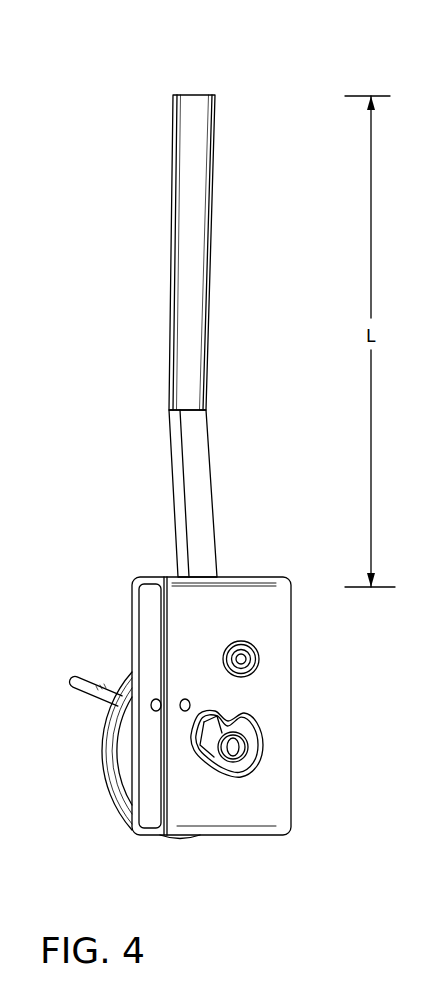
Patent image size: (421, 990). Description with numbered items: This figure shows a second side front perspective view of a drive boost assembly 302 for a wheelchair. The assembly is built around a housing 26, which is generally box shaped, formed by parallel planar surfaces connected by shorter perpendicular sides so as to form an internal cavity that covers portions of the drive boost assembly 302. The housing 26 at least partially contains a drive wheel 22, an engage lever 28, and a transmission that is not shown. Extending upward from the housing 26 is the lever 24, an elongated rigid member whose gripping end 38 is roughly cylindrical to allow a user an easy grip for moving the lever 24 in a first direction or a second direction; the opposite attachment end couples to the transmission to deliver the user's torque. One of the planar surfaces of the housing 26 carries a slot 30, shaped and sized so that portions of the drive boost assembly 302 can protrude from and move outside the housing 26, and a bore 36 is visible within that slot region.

The drive boost assembly 302 is at (128, 95).
The gripping end 38 is at (205, 163).
The lever 24 is at (205, 383).
The housing 26 is at (252, 588).
The slot 30 is at (258, 747).
The bore 36 is at (233, 752).
The drive wheel 22 is at (103, 750).
The engage lever 28 is at (95, 688).